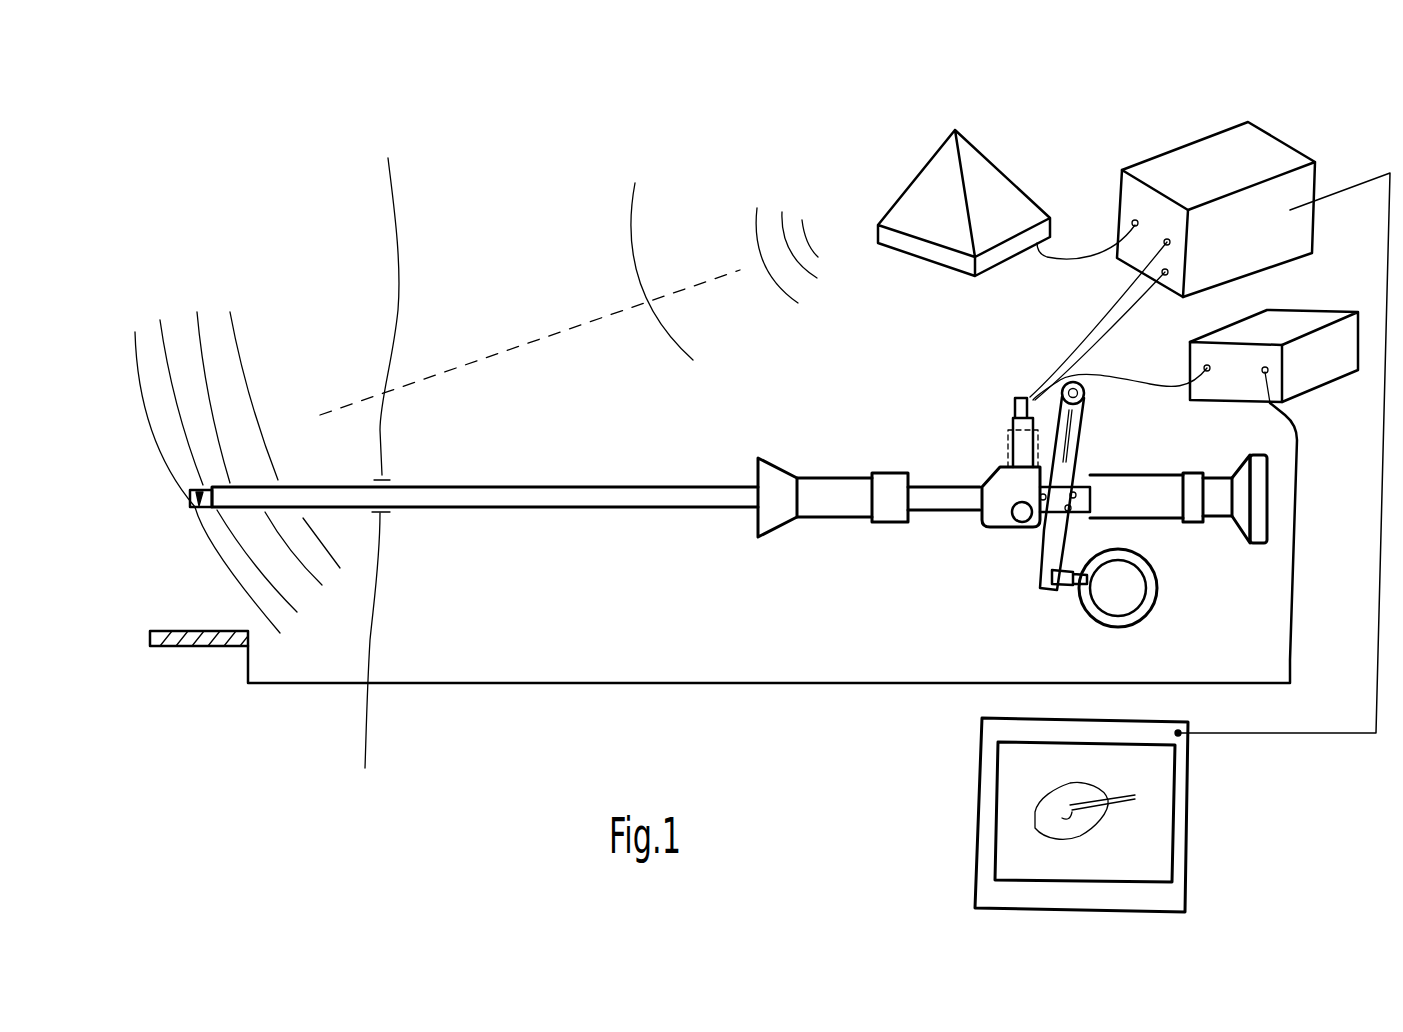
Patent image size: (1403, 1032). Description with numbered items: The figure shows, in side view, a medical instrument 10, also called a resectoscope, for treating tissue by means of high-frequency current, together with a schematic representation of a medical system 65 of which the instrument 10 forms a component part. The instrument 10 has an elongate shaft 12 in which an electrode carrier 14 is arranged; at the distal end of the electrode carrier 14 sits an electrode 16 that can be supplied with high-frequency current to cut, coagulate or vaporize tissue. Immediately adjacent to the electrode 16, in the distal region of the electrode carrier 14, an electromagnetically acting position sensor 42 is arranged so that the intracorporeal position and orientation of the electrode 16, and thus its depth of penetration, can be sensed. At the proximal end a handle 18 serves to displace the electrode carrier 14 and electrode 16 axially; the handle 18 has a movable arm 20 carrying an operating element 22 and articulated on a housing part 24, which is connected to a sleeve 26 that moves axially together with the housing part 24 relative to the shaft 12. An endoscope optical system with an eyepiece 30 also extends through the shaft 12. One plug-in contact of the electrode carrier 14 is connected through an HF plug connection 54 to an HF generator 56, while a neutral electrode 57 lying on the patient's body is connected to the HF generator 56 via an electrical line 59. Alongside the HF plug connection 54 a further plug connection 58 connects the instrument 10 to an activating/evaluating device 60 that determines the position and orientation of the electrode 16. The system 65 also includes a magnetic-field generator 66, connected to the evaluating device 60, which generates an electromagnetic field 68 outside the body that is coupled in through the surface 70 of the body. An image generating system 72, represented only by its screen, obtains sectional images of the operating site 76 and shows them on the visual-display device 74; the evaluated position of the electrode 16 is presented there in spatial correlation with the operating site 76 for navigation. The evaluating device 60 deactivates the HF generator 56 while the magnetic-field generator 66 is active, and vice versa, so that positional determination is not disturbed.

The medical instrument 10 is at (543, 524).
The elongate shaft 12 is at (440, 497).
The electrode carrier 14 is at (197, 490).
The electrode 16 is at (195, 498).
The handle 18 is at (1028, 569).
The movable arm 20 is at (1048, 538).
The operating element 22 is at (1100, 620).
The housing part 24 is at (1000, 480).
The sleeve 26 is at (922, 487).
The eyepiece 30 is at (1213, 497).
The position sensor 42 is at (200, 510).
The HF plug connection 54 is at (1005, 430).
The HF generator 56 is at (1315, 368).
The neutral electrode 57 is at (160, 648).
The further plug connection 58 is at (1020, 395).
The electrical line 59 is at (517, 683).
The activating/evaluating device 60 is at (1190, 165).
The medical system 65 is at (872, 141).
The magnetic-field generator 66 is at (980, 183).
The electromagnetic field 68 is at (198, 330).
The surface of the body 70 is at (393, 183).
The image generating system 72 is at (928, 769).
The visual-display device 74 is at (985, 840).
The operating site 76 is at (1062, 797).